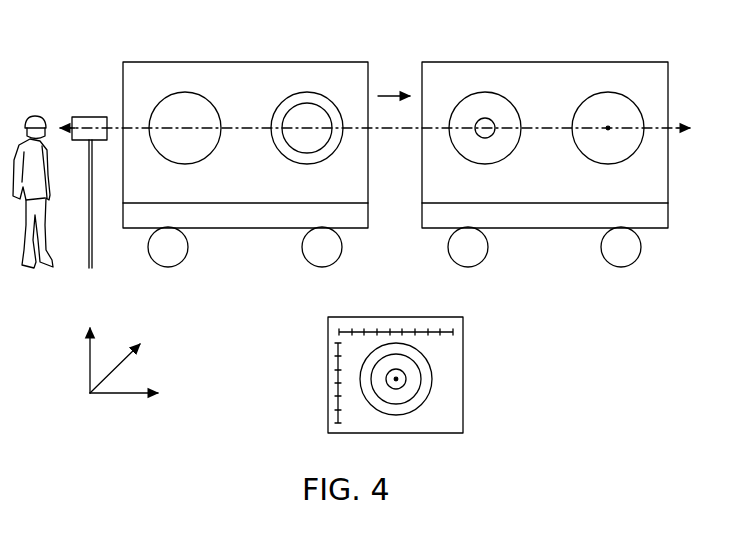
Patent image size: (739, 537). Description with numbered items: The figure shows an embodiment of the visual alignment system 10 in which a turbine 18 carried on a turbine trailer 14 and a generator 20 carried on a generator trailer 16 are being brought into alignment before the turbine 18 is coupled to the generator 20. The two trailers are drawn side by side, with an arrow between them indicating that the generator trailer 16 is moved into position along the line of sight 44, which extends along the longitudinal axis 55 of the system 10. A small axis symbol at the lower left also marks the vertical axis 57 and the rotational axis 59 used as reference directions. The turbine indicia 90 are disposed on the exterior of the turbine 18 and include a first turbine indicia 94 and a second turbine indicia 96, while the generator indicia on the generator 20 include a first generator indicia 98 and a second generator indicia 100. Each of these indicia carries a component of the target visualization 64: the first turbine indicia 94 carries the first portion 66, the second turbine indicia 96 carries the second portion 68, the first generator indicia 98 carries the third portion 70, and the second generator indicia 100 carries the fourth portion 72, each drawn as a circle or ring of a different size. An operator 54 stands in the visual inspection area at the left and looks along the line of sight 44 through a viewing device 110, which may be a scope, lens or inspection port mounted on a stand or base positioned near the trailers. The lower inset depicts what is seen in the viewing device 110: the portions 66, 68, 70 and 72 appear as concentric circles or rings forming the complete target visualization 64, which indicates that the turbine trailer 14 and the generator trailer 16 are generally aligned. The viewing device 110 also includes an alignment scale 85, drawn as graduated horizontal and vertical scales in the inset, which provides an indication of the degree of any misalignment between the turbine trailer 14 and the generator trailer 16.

The turbine system 10 is at (237, 345).
The turbine trailer 14 is at (348, 229).
The generator trailer 16 is at (655, 229).
The turbine 18 is at (350, 78).
The generator 20 is at (648, 72).
The line of sight 44 is at (675, 124).
The operator 54 is at (37, 116).
The longitudinal axis 55 is at (118, 395).
The vertical axis 57 is at (90, 361).
The rotational axis 59 is at (113, 374).
The target visualization 64 is at (410, 425).
The first portion 66 is at (184, 91).
The second portion 68 is at (311, 103).
The third portion 70 is at (486, 118).
The fourth portion 72 is at (608, 126).
The alignment scale 85 is at (380, 330).
The turbine indicia 90 is at (280, 97).
The first turbine indicia 94 is at (186, 164).
The second turbine indicia 96 is at (306, 164).
The first generator indicia 98 is at (486, 164).
The second generator indicia 100 is at (607, 164).
The viewing device 110 is at (92, 116).